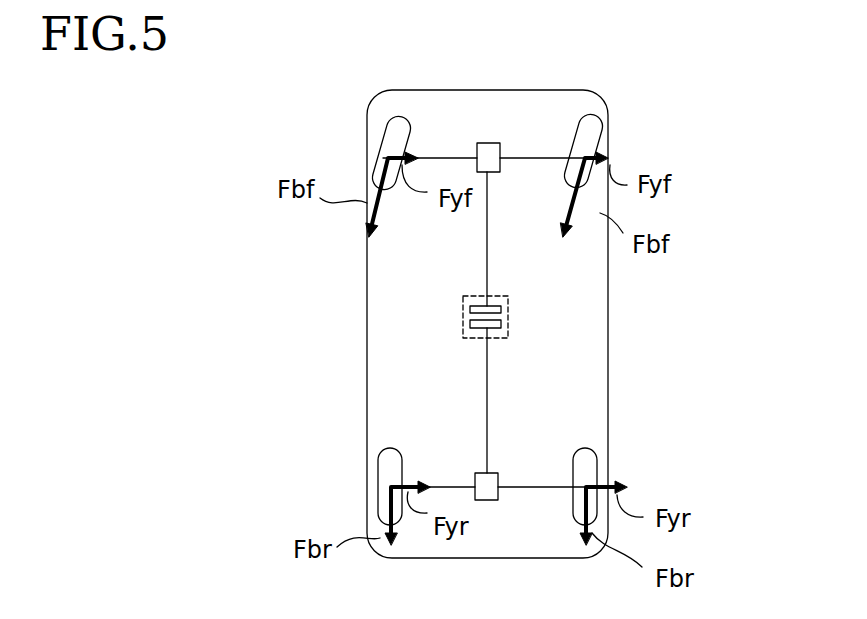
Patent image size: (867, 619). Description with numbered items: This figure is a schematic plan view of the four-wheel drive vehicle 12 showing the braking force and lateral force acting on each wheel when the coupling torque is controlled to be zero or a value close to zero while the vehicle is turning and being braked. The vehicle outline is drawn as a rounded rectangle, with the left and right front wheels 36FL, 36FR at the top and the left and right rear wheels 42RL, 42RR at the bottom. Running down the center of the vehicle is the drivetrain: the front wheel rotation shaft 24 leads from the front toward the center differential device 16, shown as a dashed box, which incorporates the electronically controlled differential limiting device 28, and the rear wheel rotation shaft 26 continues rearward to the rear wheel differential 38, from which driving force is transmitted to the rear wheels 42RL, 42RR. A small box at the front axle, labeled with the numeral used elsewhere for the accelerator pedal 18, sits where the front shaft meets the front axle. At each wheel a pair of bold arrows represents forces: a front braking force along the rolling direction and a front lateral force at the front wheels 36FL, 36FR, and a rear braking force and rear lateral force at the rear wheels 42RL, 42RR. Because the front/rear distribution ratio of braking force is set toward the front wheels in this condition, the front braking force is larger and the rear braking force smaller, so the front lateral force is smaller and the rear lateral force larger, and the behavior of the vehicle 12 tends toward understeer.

The four-wheel drive vehicle 12 is at (367, 303).
The center differential device 16 is at (508, 322).
The accelerator pedal 18 is at (488, 152).
The front wheel rotation shaft 24 is at (487, 250).
The rear wheel rotation shaft 26 is at (487, 393).
The electronically controlled differential limiting device 28 is at (480, 330).
The left front wheel 36FL is at (397, 130).
The right front wheel 36FR is at (594, 122).
The rear wheel differential 38 is at (487, 500).
The left rear wheel 42RL is at (392, 455).
The right rear wheel 42RR is at (585, 455).